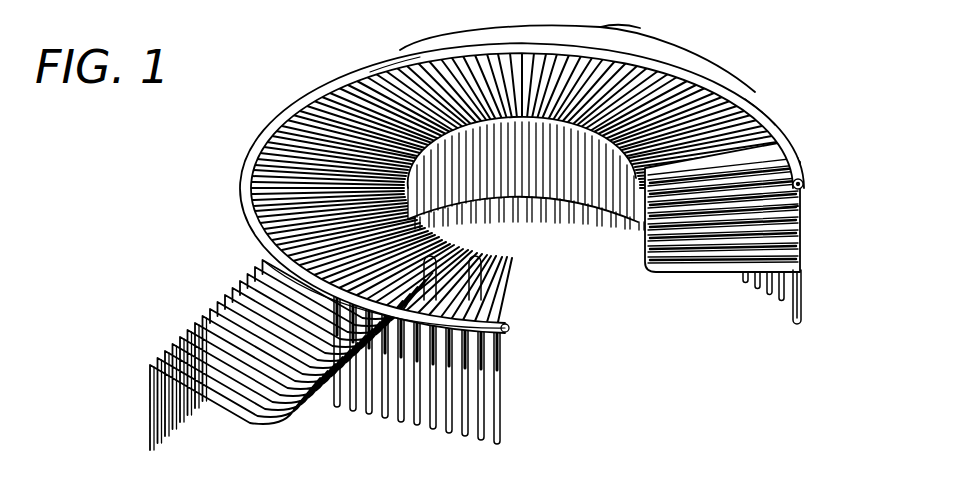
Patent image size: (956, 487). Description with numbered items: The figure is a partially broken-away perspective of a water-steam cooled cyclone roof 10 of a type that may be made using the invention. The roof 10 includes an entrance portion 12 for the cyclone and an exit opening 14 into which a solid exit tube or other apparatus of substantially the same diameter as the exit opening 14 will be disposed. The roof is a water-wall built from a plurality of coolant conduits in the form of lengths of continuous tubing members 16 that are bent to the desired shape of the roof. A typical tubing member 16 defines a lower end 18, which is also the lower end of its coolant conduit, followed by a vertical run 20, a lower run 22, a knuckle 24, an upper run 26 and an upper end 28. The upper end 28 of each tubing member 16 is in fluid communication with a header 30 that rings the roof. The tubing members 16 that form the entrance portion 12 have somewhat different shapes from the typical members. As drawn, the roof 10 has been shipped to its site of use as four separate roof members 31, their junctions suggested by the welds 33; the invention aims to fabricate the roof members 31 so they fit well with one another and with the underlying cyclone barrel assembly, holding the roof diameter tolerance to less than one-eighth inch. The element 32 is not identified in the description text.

The cyclone roof 10 is at (186, 191).
The entrance portion 12 is at (165, 354).
The exit opening 14 is at (526, 210).
The tubing members 16 is at (775, 128).
The lower end 18 is at (797, 312).
The vertical run 20 is at (807, 302).
The lower run 22 is at (747, 265).
The knuckle 24 is at (640, 238).
The upper run 26 is at (790, 212).
The upper end 28 is at (800, 178).
The header 30 is at (243, 173).
The roof members 31 is at (640, 28).
The tube segment 32 is at (318, 86).
The welds 33 is at (397, 58).